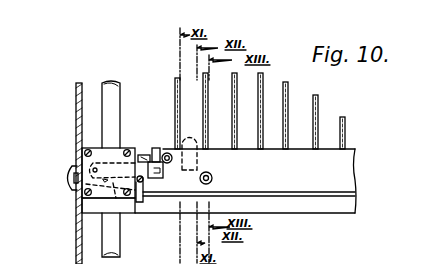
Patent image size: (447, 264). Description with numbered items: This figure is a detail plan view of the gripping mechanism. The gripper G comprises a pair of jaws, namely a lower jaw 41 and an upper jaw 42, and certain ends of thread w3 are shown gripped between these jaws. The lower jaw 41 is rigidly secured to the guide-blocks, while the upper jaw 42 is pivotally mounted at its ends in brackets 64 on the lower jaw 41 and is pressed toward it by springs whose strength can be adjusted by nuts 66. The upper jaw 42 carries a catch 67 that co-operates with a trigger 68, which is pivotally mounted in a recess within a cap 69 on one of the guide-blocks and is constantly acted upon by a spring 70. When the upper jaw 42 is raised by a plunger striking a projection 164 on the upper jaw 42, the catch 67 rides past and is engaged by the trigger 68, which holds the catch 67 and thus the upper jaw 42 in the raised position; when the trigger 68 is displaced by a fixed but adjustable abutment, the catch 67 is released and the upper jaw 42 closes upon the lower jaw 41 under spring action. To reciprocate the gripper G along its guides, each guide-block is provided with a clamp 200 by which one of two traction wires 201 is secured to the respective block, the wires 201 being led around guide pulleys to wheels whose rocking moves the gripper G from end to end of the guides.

The traction wire 201 is at (76, 107).
The clamp 200 is at (74, 177).
The cap 69 is at (108, 155).
The spring 70 is at (108, 207).
The catch 67 is at (157, 149).
The trigger 68 is at (157, 172).
The bracket 64 is at (139, 203).
The projection 164 is at (188, 137).
The nut 66 is at (213, 176).
The upper jaw 42 is at (249, 170).
The lower jaw 41 is at (245, 204).
The gripper G is at (253, 181).
The thread ends w3 is at (312, 100).